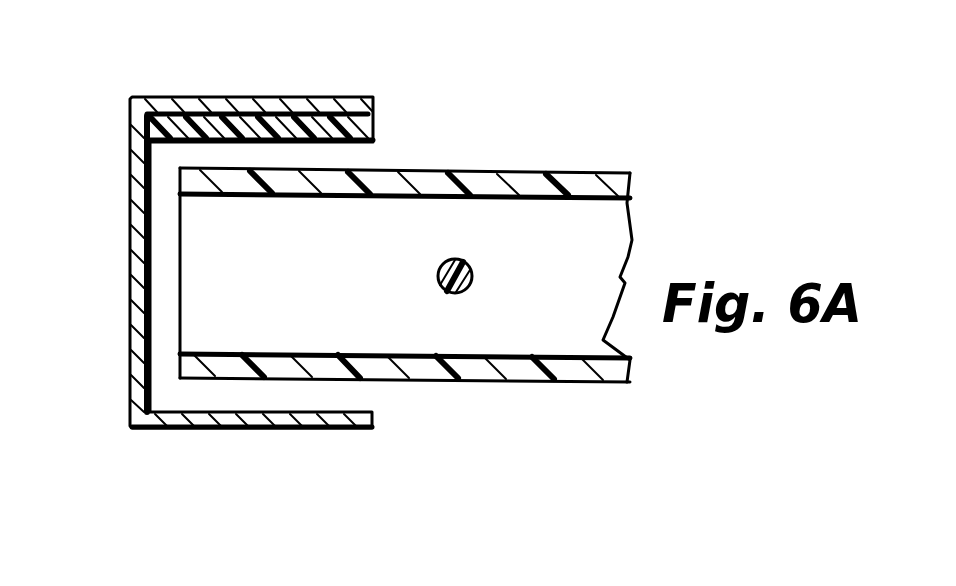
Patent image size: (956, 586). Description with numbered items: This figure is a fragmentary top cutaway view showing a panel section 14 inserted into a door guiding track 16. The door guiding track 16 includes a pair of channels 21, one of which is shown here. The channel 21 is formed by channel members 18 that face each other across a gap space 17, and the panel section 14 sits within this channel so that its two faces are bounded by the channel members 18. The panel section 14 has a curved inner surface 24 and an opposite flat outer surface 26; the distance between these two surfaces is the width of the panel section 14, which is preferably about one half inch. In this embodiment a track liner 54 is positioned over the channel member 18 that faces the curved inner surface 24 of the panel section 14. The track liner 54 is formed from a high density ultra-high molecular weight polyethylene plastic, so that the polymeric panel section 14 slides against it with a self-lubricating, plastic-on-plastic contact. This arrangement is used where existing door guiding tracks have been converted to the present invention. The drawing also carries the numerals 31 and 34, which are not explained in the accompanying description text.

The panel section 14 is at (617, 400).
The door guiding track 16 is at (140, 436).
The gap space 17 is at (360, 395).
The channel member 18 is at (238, 104).
The channel 21 is at (132, 382).
The curved inner surface 24 is at (437, 172).
The flat outer surface 26 is at (527, 383).
The hole 31 is at (472, 266).
The cavity 34 is at (197, 232).
The track liner 54 is at (315, 100).